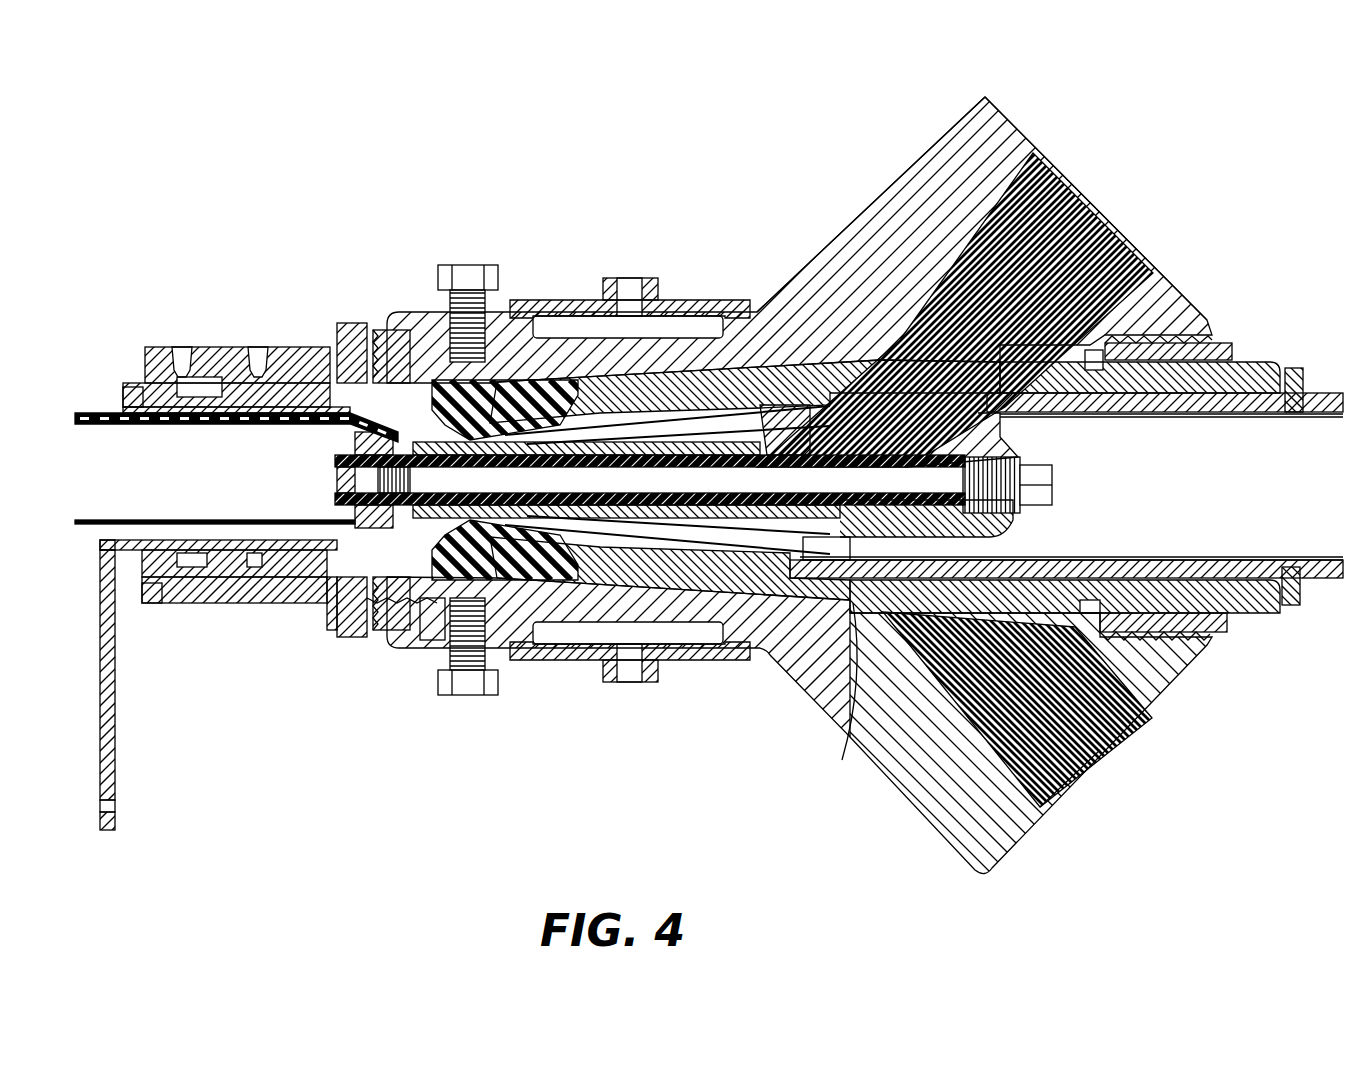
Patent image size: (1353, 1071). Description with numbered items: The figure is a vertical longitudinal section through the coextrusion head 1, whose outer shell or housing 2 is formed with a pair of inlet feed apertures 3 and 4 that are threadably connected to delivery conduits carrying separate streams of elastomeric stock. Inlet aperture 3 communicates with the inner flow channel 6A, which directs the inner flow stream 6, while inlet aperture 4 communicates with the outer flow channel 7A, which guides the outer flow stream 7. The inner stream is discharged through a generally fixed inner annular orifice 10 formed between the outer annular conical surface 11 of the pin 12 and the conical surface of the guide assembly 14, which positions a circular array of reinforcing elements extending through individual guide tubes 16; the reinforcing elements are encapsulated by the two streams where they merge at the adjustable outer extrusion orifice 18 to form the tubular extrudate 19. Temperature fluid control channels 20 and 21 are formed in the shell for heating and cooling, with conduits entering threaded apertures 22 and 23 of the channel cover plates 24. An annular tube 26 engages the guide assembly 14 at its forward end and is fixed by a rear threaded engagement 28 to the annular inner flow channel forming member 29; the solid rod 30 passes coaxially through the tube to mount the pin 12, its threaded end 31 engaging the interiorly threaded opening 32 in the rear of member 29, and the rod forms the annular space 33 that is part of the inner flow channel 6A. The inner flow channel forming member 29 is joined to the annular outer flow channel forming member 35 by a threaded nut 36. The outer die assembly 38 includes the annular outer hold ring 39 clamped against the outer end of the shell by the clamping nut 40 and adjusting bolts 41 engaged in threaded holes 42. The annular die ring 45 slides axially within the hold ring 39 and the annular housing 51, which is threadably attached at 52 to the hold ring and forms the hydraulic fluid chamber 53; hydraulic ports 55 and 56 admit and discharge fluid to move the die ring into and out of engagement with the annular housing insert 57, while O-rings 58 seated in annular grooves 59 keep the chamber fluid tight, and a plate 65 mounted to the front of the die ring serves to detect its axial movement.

The coextrusion head 1 is at (556, 203).
The outer shell or housing 2 is at (872, 275).
The inlet feed aperture 3 is at (1085, 225).
The inlet feed aperture 4 is at (1190, 655).
The inner flow stream 6 is at (1113, 268).
The inner flow channel 6A is at (990, 270).
The outer flow stream 7 is at (1108, 760).
The outer flow channel 7A is at (1085, 790).
The inner annular orifice 10 is at (340, 492).
The outer annular conical surface 11 is at (352, 522).
The pin 12 is at (352, 440).
The guide assembly 14 is at (540, 380).
The guide tube 16 is at (1196, 555).
The outer extrusion orifice 18 is at (362, 330).
The tubular extrudate 19 is at (93, 540).
The temperature fluid control channel 20 is at (582, 316).
The temperature fluid control channel 21 is at (585, 644).
The threaded aperture 22 is at (635, 278).
The threaded aperture 23 is at (622, 682).
The channel cover plate 24 is at (703, 300).
The annular tube 26 is at (708, 520).
The rear threaded engagement 28 is at (802, 585).
The inner flow channel forming member 29 is at (985, 432).
The solid rod 30 is at (985, 520).
The threaded end 31 is at (1046, 490).
The interiorly threaded opening 32 is at (1012, 464).
The annular space 33 is at (620, 466).
The annular outer flow channel forming member 35 is at (1255, 365).
The threaded nut 36 is at (1312, 494).
The outer die assembly 38 is at (345, 662).
The annular outer hold ring 39 is at (372, 612).
The clamping nut 40 is at (330, 620).
The adjusting bolt 41 is at (468, 268).
The threaded hole 42 is at (424, 642).
The annular die ring 45 is at (205, 542).
The annular housing 51 is at (240, 603).
The threaded attachment 52 is at (292, 605).
The annular interior hydraulic fluid chamber 53 is at (193, 577).
The hydraulic port 55 is at (183, 347).
The hydraulic port 56 is at (262, 345).
The annular housing insert 57 is at (400, 327).
The O-ring 58 is at (143, 350).
The annular groove 59 is at (243, 377).
The plate 65 is at (100, 748).